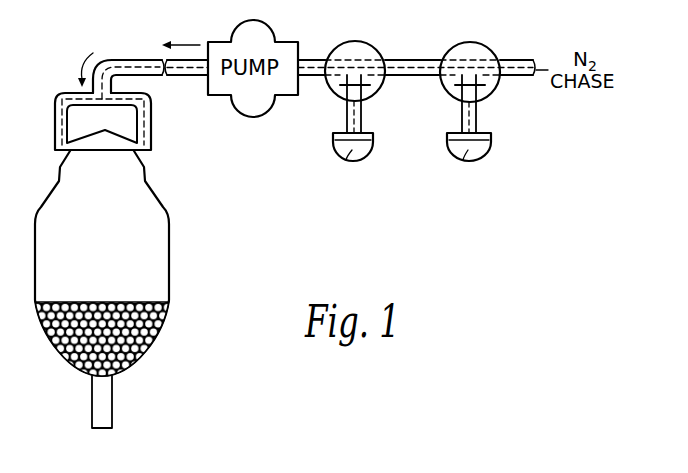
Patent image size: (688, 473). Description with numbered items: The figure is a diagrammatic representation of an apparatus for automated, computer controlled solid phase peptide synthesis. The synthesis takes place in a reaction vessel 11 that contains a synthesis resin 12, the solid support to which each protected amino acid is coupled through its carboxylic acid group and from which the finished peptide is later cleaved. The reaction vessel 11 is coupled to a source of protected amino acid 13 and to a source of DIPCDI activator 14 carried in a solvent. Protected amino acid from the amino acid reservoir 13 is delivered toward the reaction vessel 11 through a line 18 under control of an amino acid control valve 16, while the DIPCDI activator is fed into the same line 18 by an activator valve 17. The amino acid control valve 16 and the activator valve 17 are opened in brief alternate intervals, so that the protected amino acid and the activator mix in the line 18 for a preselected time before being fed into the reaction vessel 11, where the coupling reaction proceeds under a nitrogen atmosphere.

The reaction vessel 11 is at (113, 210).
The synthesis resin 12 is at (148, 353).
The source of protected amino acid 13 is at (469, 162).
The source of DIPCDI activator 14 is at (348, 162).
The amino acid control valve 16 is at (478, 50).
The activator valve 17 is at (337, 50).
The line 18 is at (118, 65).